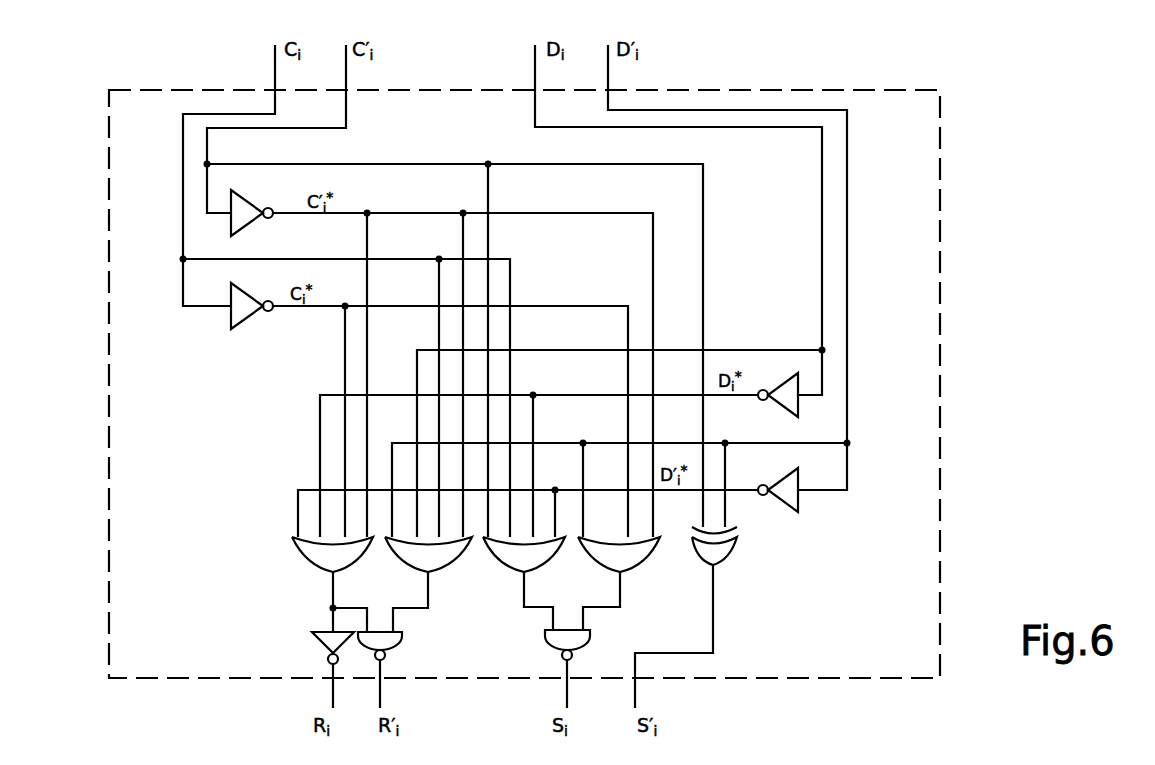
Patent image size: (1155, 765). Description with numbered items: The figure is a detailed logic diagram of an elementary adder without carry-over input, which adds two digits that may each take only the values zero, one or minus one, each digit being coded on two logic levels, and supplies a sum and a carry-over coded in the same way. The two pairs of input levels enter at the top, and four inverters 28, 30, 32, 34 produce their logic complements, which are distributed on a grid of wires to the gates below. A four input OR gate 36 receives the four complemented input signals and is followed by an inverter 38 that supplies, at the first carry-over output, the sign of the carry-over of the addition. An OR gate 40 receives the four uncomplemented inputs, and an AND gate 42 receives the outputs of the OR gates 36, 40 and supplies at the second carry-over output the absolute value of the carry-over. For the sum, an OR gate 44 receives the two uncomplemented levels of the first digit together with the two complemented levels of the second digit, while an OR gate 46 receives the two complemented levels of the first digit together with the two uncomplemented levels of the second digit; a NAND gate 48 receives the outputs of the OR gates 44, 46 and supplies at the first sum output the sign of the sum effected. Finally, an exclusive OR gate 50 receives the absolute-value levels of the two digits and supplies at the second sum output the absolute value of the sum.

The inverter 28 is at (249, 321).
The inverter 30 is at (249, 196).
The inverter 32 is at (775, 410).
The inverter 34 is at (800, 502).
The four input OR gate 36 is at (312, 561).
The inverter 38 is at (313, 641).
The OR gate 40 is at (414, 566).
The AND gate 42 is at (404, 650).
The OR gate 44 is at (518, 565).
The OR gate 46 is at (645, 562).
The NAND gate 48 is at (591, 640).
The exclusive OR gate 50 is at (735, 552).